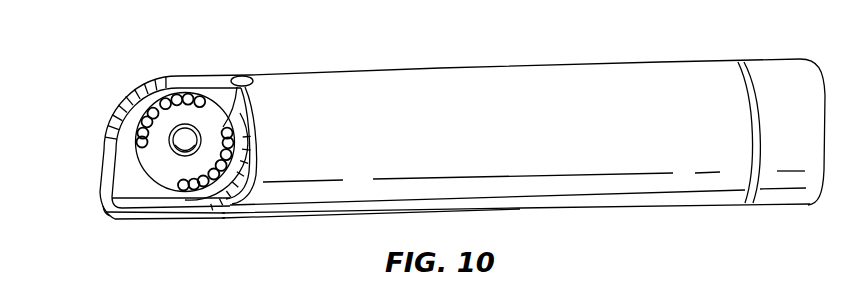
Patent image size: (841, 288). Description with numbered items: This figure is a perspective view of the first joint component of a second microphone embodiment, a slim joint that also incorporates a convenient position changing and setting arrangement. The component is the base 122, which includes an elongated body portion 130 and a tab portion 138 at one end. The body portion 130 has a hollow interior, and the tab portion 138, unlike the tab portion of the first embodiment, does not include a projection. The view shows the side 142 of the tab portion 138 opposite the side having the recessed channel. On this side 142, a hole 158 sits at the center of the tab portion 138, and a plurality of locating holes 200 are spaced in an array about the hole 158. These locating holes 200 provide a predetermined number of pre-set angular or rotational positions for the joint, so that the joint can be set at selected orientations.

The base 122 is at (581, 66).
The body portion 130 is at (650, 187).
The tab portion 138 is at (123, 173).
The side of the tab portion 142 is at (133, 185).
The hole 158 is at (176, 138).
The locating holes 200 is at (221, 108).